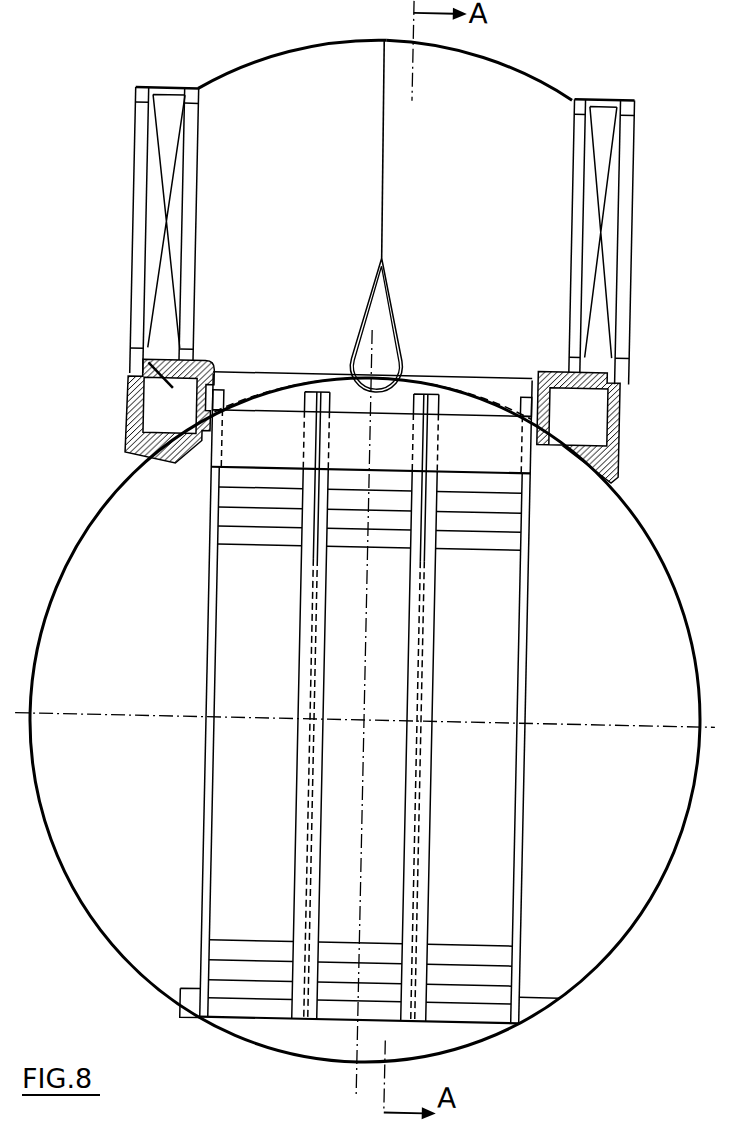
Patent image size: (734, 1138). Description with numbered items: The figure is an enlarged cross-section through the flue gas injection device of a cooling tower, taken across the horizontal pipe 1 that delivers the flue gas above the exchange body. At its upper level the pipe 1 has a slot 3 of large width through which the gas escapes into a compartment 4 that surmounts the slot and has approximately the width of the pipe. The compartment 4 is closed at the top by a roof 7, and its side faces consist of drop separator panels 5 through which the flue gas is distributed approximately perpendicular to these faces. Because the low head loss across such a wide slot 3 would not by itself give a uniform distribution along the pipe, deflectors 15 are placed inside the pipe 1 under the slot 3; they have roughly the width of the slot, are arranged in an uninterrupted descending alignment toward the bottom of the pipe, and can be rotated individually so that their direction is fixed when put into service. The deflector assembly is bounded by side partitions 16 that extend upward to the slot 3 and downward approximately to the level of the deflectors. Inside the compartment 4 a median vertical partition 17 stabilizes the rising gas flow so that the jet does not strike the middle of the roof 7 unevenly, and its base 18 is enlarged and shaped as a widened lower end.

The horizontal pipe 1 is at (660, 508).
The slot 3 is at (453, 411).
The compartment 4 is at (510, 102).
The drop separator panel 5 is at (592, 233).
The roof 7 is at (467, 58).
The deflector 15 is at (505, 449).
The side partition 16 is at (202, 455).
The median vertical partition 17 is at (372, 150).
The base of vertical partition 18 is at (392, 336).